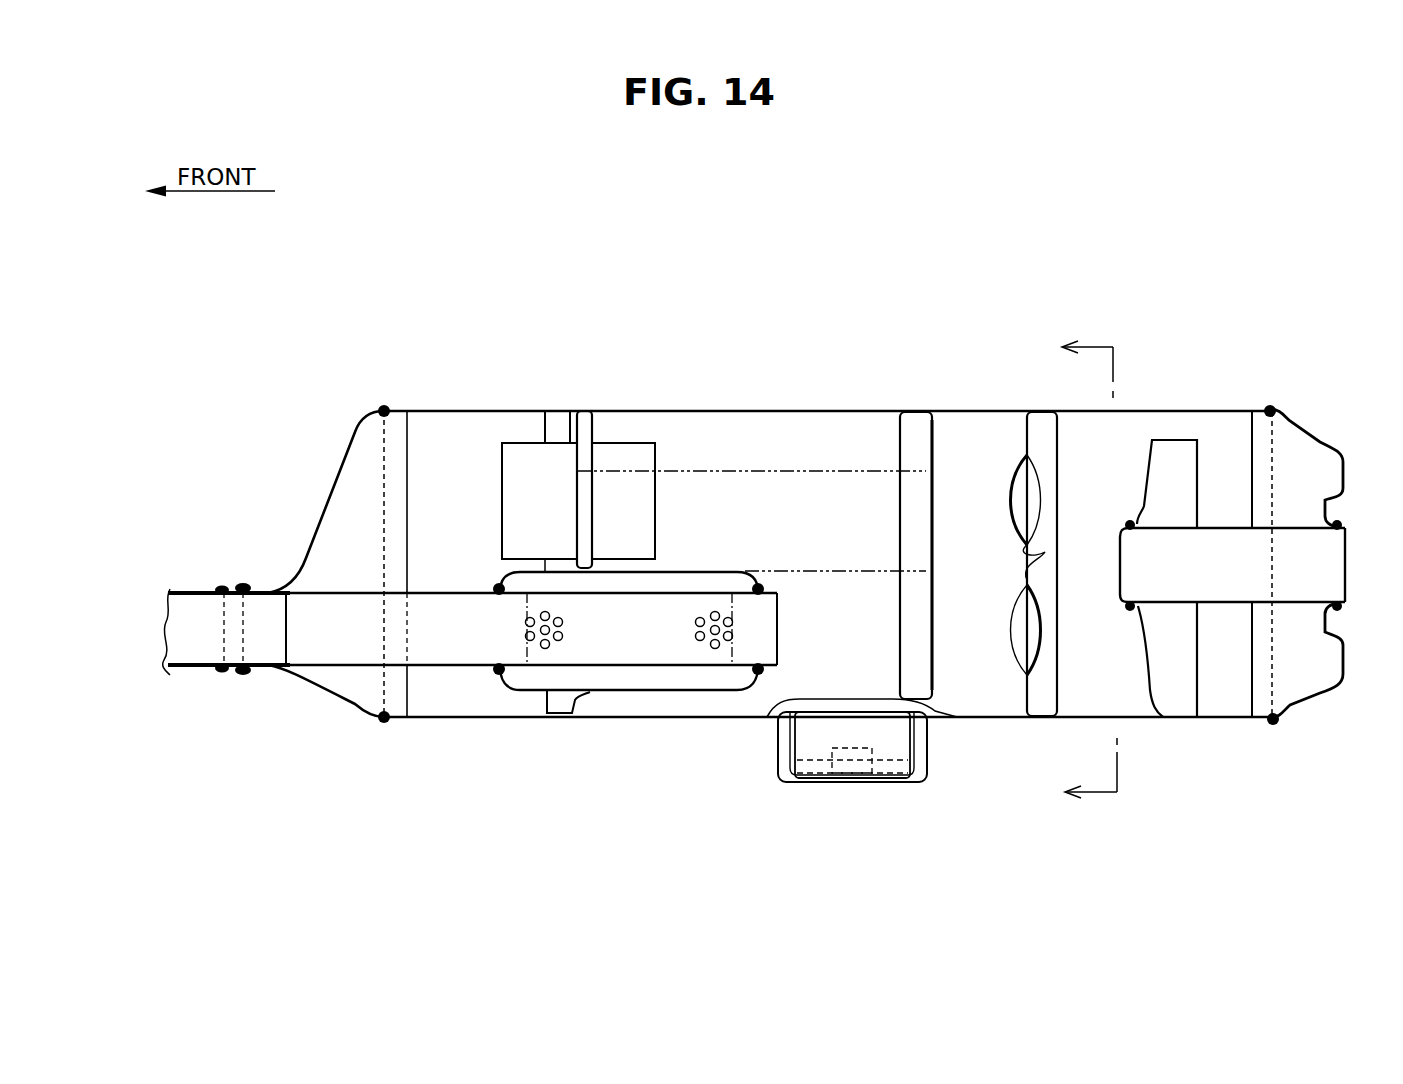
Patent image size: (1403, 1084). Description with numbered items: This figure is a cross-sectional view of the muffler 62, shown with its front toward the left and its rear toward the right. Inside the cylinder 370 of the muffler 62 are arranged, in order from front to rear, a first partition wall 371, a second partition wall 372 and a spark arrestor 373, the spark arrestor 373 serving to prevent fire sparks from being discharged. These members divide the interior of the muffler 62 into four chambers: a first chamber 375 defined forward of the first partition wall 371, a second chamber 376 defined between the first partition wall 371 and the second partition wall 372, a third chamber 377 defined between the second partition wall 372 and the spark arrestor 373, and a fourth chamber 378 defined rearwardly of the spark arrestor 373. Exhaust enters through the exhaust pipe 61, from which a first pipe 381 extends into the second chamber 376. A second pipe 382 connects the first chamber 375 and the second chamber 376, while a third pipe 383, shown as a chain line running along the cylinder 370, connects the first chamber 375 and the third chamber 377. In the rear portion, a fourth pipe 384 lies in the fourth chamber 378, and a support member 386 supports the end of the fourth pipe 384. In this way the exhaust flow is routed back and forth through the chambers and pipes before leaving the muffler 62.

The exhaust pipe 61 is at (192, 591).
The muffler 62 is at (454, 280).
The cylinder 370 is at (752, 410).
The first partition wall 371 is at (592, 425).
The second partition wall 372 is at (933, 437).
The spark arrestor 373 is at (1016, 435).
The first chamber 375 is at (468, 686).
The second chamber 376 is at (711, 694).
The third chamber 377 is at (973, 675).
The fourth chamber 378 is at (1129, 694).
The first pipe 381 is at (327, 670).
The second pipe 382 is at (520, 428).
The third pipe 383 is at (830, 468).
The fourth pipe 384 is at (1240, 606).
The support member 386 is at (1147, 468).